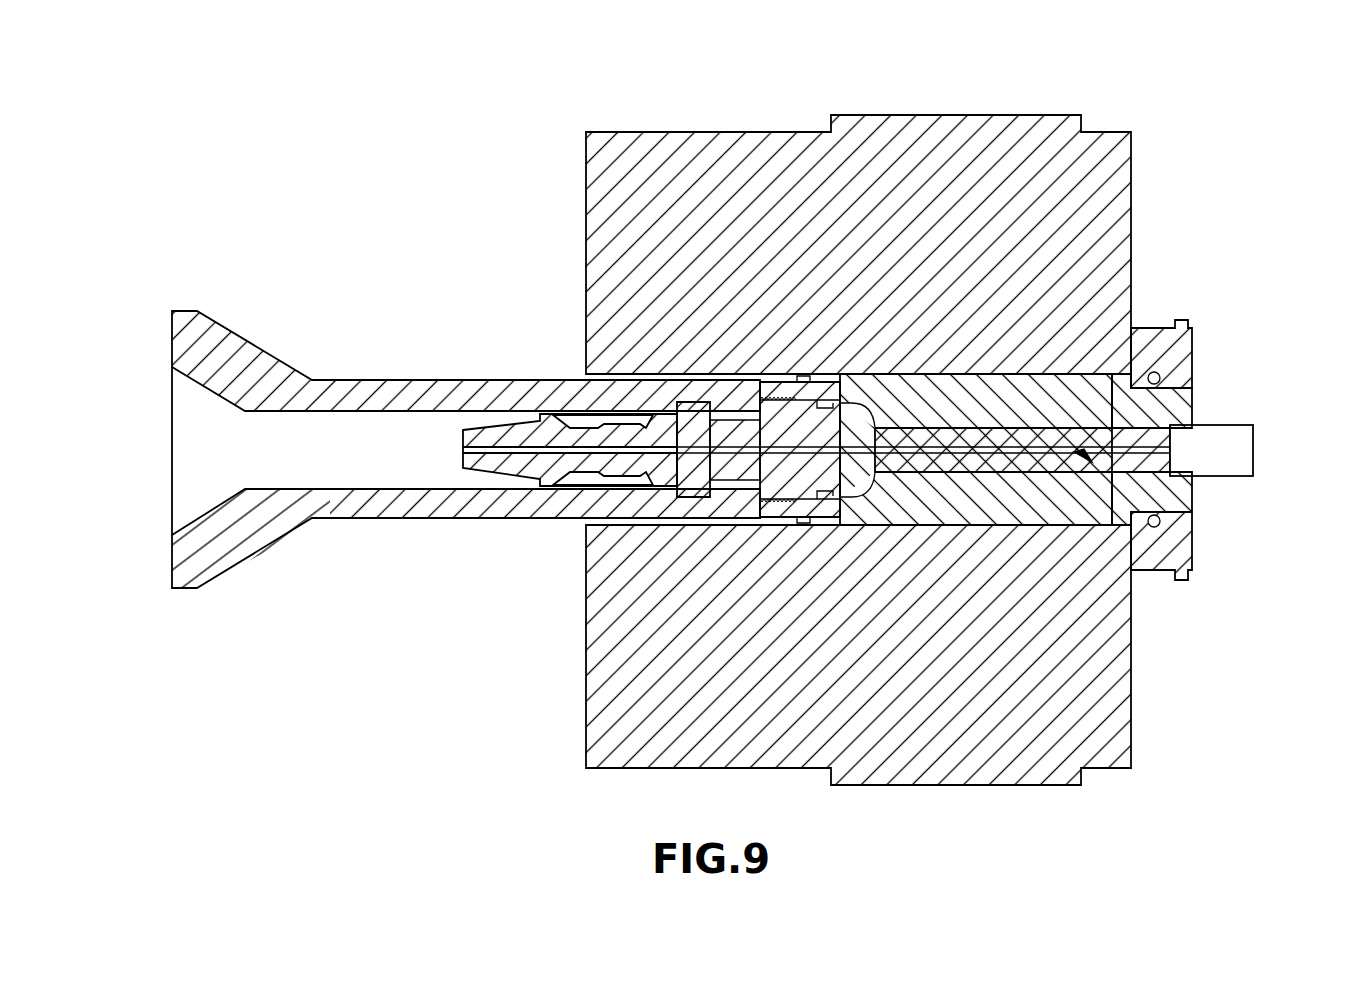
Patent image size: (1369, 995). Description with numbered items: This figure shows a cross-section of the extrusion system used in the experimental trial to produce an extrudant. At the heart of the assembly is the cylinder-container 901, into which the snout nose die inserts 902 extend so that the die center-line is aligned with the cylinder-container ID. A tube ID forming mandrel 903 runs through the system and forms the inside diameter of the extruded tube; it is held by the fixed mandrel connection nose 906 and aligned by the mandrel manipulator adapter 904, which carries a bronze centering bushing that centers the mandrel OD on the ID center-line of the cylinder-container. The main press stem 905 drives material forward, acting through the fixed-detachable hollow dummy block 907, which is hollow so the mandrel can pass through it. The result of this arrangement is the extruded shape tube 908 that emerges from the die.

The cylinder-container 901 is at (1131, 170).
The snout nose die inserts 902 is at (1113, 378).
The tube ID forming mandrel 903 is at (1088, 457).
The mandrel manipulator adapter 904 is at (580, 488).
The main press stem 905 is at (398, 380).
The fixed mandrel connection nose 906 is at (723, 380).
The fixed-detachable hollow dummy block 907 is at (783, 377).
The extruded shape tube 908 is at (1040, 560).